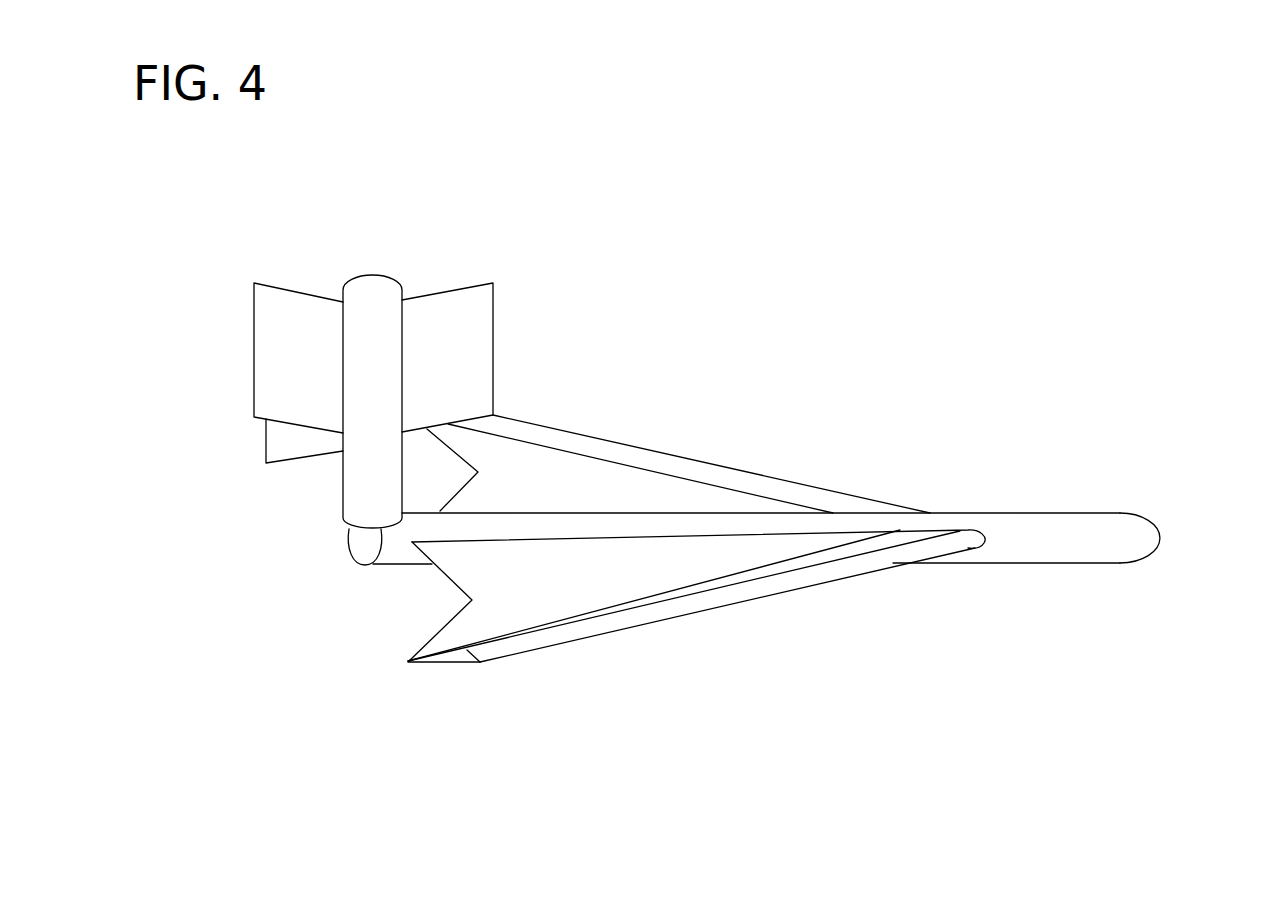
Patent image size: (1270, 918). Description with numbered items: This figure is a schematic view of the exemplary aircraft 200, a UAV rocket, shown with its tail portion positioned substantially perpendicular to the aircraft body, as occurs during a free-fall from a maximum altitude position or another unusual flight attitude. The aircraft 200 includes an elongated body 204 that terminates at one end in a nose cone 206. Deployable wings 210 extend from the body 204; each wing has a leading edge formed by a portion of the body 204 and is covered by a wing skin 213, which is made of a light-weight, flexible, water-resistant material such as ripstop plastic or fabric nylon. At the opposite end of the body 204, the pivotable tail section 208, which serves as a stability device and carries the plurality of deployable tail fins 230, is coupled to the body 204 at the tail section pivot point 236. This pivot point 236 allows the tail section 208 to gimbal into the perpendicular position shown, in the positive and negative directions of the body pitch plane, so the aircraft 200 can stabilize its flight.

The aircraft 200 is at (957, 265).
The body 204 is at (872, 527).
The nose cone 206 is at (1120, 565).
The pivotable tail section 208 is at (405, 278).
The deployable wings 210 is at (590, 490).
The wing skin 213 is at (560, 582).
The deployable tail fins 230 is at (492, 332).
The tail section pivot point 236 is at (347, 523).